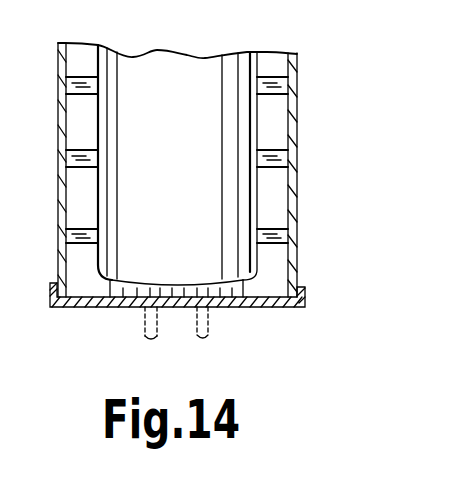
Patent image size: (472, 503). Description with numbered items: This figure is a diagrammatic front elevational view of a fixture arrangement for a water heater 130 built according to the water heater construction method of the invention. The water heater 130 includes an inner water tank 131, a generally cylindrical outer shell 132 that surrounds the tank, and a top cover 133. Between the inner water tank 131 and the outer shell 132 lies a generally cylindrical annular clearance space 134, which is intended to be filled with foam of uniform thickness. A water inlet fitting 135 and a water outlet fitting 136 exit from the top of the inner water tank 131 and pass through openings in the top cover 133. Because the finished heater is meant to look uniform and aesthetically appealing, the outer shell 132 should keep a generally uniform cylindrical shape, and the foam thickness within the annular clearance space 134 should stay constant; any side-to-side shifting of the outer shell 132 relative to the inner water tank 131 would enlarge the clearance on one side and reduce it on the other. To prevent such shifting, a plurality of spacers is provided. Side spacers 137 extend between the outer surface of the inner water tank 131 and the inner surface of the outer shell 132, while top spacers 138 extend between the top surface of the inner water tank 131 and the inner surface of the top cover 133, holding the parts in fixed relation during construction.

The water heater 130 is at (328, 169).
The inner water tank 131 is at (208, 67).
The outer shell 132 is at (291, 129).
The top cover 133 is at (75, 305).
The annular clearance space 134 is at (282, 205).
The water inlet fitting 135 is at (151, 340).
The water outlet fitting 136 is at (203, 339).
The side spacers 137 is at (277, 243).
The top spacers 138 is at (118, 307).